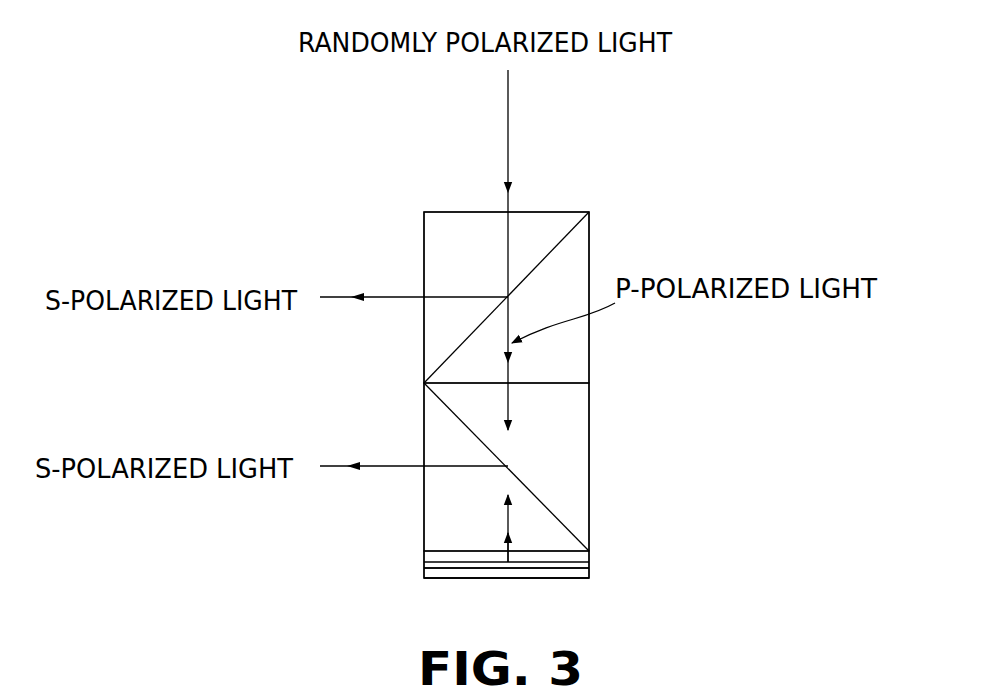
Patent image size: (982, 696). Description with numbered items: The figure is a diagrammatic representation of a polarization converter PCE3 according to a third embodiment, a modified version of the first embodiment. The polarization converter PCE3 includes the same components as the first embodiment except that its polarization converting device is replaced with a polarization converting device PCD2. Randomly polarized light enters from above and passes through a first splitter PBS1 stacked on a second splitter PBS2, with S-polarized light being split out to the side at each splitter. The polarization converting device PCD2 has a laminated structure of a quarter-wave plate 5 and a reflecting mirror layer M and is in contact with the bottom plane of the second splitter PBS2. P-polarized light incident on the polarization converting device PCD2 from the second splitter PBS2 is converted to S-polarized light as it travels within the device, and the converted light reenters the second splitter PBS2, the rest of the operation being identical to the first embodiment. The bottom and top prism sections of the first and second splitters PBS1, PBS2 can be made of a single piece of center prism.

The polarization converter PCE3 is at (406, 276).
The first splitter PBS1 is at (572, 273).
The second splitter PBS2 is at (551, 446).
The polarization converting device PCD2 is at (414, 562).
The λ/4 wave plate 5 is at (573, 560).
The reflecting mirror layer M is at (572, 580).